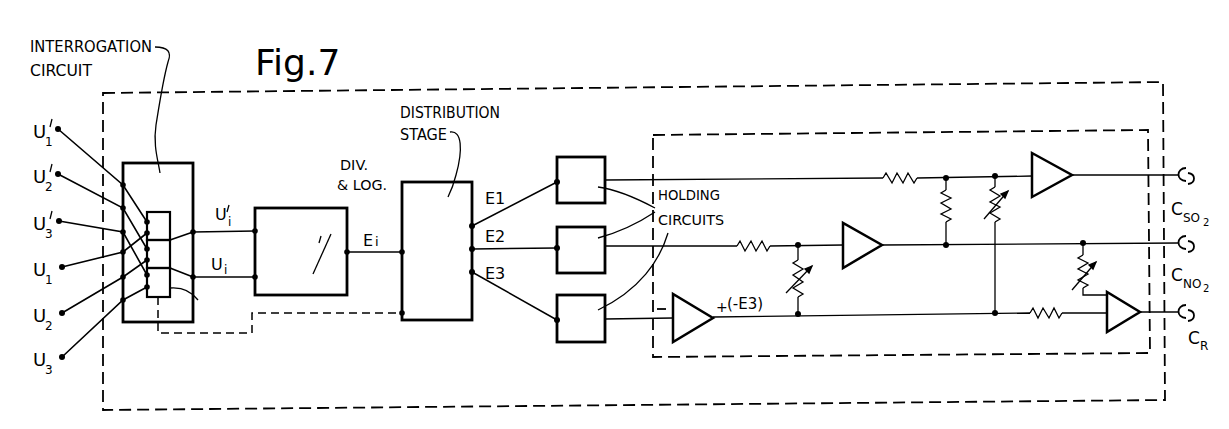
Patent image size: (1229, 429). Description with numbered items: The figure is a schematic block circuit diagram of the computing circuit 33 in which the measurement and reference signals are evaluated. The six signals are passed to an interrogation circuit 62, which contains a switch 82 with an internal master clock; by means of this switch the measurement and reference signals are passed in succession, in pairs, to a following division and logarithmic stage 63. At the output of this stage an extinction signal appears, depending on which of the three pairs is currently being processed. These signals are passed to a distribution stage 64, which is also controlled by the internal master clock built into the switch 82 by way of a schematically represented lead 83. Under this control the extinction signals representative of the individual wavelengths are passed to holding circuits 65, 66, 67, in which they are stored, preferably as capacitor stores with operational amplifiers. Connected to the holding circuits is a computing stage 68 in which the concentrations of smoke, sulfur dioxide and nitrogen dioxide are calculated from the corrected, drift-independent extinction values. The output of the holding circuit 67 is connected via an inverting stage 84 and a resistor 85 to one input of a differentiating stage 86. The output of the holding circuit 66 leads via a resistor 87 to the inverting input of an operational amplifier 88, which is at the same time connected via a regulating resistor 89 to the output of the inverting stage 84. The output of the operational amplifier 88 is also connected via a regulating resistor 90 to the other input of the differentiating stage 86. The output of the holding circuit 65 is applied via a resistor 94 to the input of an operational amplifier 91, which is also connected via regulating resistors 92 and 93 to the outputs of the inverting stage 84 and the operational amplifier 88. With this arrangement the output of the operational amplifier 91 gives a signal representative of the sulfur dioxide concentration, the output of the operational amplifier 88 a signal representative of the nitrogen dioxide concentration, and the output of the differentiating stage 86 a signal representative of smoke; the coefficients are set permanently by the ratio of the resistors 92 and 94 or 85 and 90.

The computing circuit 33 is at (637, 88).
The interrogation circuit 62 is at (172, 163).
The division and logarithmic stage 63 is at (298, 208).
The distribution stage 64 is at (415, 182).
The holding circuit 65 is at (572, 157).
The holding circuit 66 is at (610, 212).
The holding circuit 67 is at (610, 280).
The computing stage 68 is at (968, 133).
The switch 82 is at (198, 300).
The lead 83 is at (295, 313).
The inverting stage 84 is at (698, 331).
The resistor 85 is at (1034, 318).
The differentiating stage 86 is at (1123, 332).
The resistor 87 is at (746, 240).
The operational amplifier 88 is at (868, 253).
The regulating resistor 89 is at (808, 291).
The regulating resistor 90 is at (1078, 262).
The operational amplifier 91 is at (1058, 153).
The regulating resistor 92 is at (943, 218).
The regulating resistor 93 is at (1004, 216).
The resistor 94 is at (886, 172).